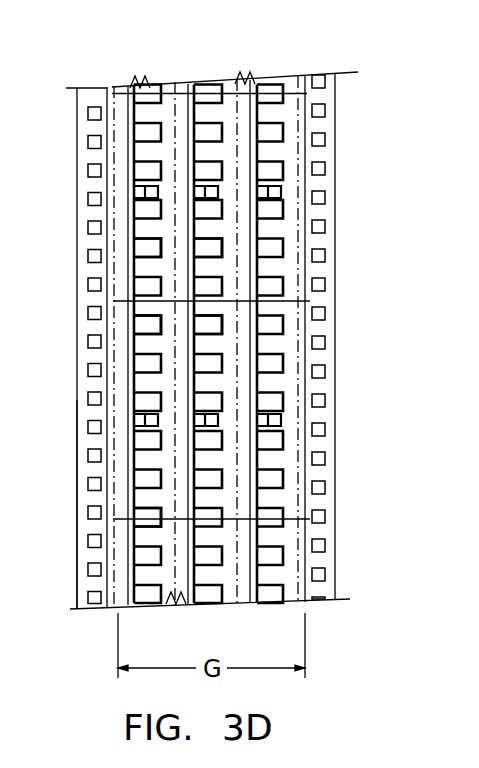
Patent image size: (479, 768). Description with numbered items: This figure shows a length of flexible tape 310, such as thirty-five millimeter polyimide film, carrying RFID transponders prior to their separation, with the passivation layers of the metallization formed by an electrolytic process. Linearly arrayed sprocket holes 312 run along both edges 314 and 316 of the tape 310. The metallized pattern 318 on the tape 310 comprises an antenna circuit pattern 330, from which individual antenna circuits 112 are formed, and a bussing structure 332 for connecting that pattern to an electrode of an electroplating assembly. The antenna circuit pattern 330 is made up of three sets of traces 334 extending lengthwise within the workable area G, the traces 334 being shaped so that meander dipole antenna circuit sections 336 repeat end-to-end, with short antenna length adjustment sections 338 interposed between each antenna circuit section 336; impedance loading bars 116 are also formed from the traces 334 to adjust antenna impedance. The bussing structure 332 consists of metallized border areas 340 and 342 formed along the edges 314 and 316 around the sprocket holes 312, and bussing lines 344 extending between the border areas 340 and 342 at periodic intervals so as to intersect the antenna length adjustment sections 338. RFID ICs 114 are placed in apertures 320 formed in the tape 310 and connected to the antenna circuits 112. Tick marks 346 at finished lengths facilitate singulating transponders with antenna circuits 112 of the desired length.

The flexible tape 310 is at (287, 80).
The sprocket holes 312 is at (322, 108).
The edge 314 is at (77, 92).
The edge 316 is at (337, 132).
The metallized pattern 318 is at (281, 192).
The aperture 320 is at (325, 197).
The antenna circuit pattern 330 is at (335, 275).
The bussing structure 332 is at (337, 360).
The traces 334 is at (222, 240).
The antenna circuit section 336 is at (337, 430).
The antenna length adjustment section 338 is at (228, 312).
The border area 340 is at (78, 445).
The border area 342 is at (366, 339).
The bussing lines 344 is at (310, 519).
The tick marks 346 is at (132, 502).
The antenna circuit 112 is at (133, 147).
The RFID IC 114 is at (148, 200).
The impedance adjustment elements 116 is at (128, 163).